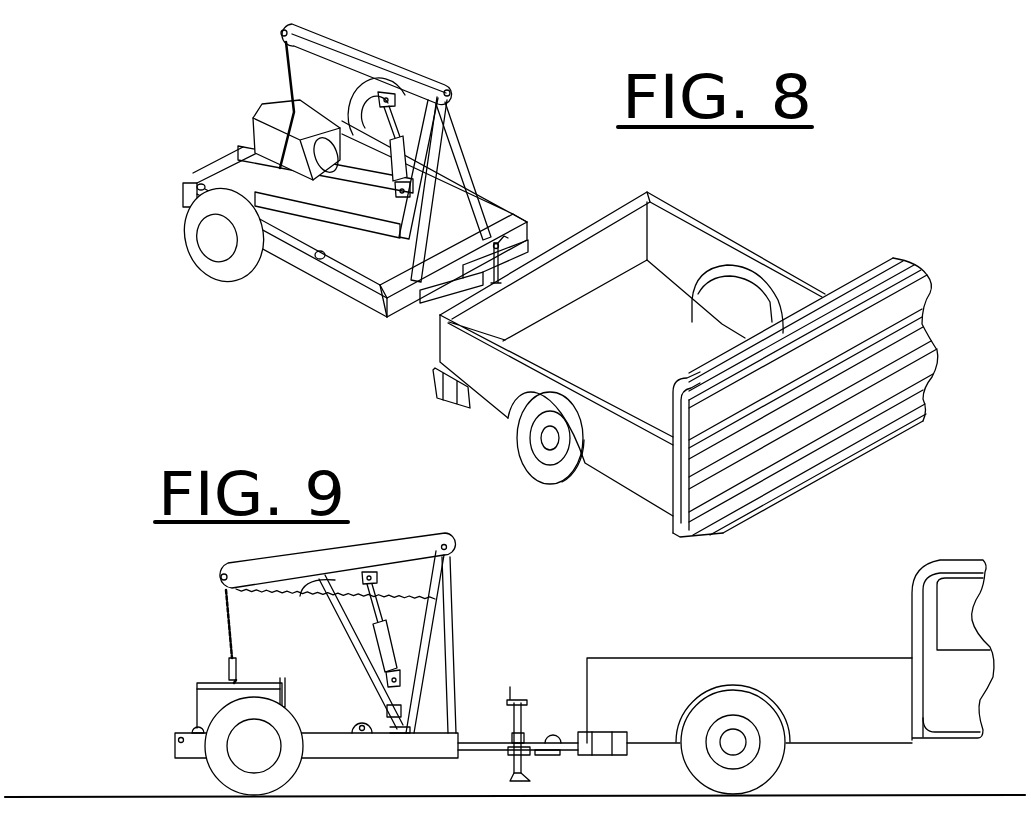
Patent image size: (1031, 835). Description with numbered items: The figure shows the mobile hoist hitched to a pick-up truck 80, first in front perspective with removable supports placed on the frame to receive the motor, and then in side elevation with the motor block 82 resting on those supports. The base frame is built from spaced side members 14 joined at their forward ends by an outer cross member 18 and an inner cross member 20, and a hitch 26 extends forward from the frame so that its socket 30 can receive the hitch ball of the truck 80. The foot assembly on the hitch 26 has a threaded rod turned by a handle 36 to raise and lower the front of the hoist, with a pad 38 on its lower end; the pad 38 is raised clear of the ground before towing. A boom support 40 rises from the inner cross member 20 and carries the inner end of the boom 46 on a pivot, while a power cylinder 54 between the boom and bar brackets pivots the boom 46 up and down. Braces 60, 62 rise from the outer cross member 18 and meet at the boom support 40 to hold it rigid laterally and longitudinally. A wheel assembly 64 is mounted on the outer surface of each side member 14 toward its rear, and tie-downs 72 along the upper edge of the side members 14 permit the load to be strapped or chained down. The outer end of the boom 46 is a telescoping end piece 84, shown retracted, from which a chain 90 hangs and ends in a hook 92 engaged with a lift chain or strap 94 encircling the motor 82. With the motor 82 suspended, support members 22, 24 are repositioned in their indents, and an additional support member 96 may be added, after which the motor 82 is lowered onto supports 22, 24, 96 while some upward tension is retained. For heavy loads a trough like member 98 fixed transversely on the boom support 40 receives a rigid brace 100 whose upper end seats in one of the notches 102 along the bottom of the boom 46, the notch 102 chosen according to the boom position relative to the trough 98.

In FIG. 8, the side member 14 is at (322, 277).
In FIG. 9, the side member 14 is at (437, 754).
In FIG. 8, the outer cross member 18 is at (403, 303).
In FIG. 8, the inner cross member 20 is at (375, 267).
In FIG. 8, the support member 22 is at (200, 175).
In FIG. 8, the support member 24 is at (235, 155).
In FIG. 8, the hitch 26 is at (450, 297).
In FIG. 9, the hitch 26 is at (482, 750).
In FIG. 9, the socket 30 is at (560, 735).
In FIG. 8, the handle 36 is at (503, 262).
In FIG. 9, the handle 36 is at (520, 697).
In FIG. 9, the pad 38 is at (532, 778).
In FIG. 8, the boom support 40 is at (442, 123).
In FIG. 9, the boom support 40 is at (436, 578).
In FIG. 8, the boom 46 is at (350, 54).
In FIG. 9, the boom 46 is at (343, 553).
In FIG. 8, the power cylinder 54 is at (394, 144).
In FIG. 9, the power cylinder 54 is at (387, 640).
In FIG. 8, the brace 60 is at (405, 252).
In FIG. 9, the brace 60 is at (441, 633).
In FIG. 8, the brace 62 is at (466, 195).
In FIG. 8, the wheel assembly 64 is at (168, 284).
In FIG. 9, the tie-down 72 is at (357, 728).
In FIG. 8, the pick-up truck 80 is at (752, 217).
In FIG. 9, the pick-up truck 80 is at (750, 640).
In FIG. 8, the motor block 82 is at (205, 124).
In FIG. 9, the motor block 82 is at (155, 711).
In FIG. 8, the end piece 84 is at (279, 32).
In FIG. 9, the end piece 84 is at (214, 576).
In FIG. 8, the chain 90 is at (283, 80).
In FIG. 9, the chain 90 is at (227, 610).
In FIG. 9, the hook 92 is at (230, 662).
In FIG. 9, the lift chain or strap 94 is at (232, 703).
In FIG. 8, the additional support member 96 is at (283, 227).
In FIG. 9, the trough like member 98 is at (388, 714).
In FIG. 9, the rigid brace 100 is at (357, 647).
In FIG. 9, the notch 102 is at (300, 583).